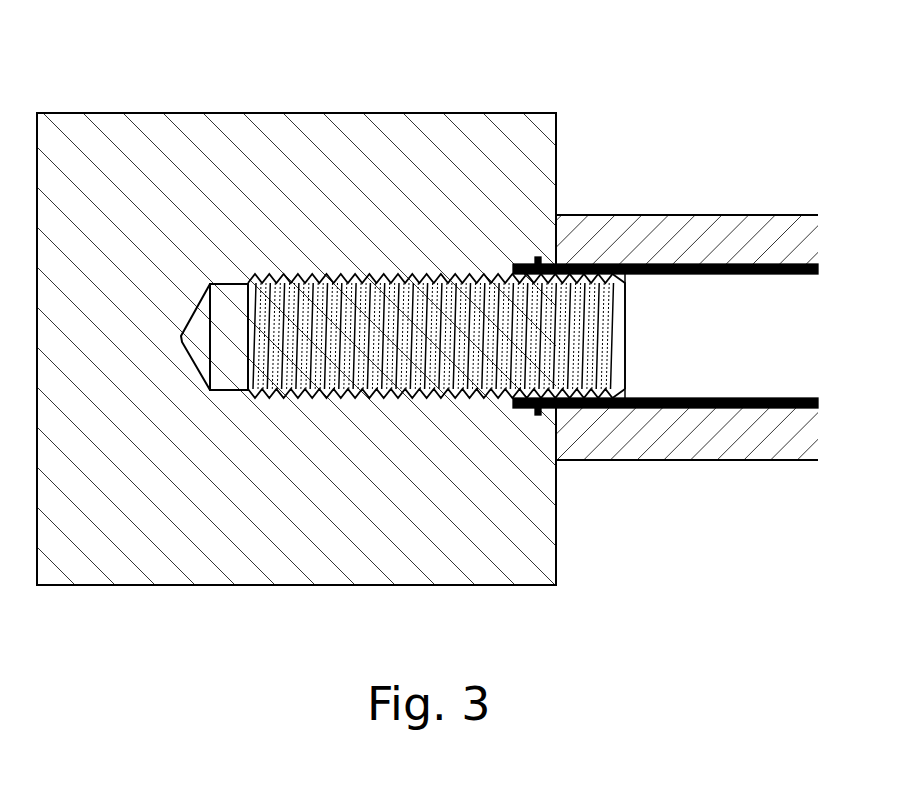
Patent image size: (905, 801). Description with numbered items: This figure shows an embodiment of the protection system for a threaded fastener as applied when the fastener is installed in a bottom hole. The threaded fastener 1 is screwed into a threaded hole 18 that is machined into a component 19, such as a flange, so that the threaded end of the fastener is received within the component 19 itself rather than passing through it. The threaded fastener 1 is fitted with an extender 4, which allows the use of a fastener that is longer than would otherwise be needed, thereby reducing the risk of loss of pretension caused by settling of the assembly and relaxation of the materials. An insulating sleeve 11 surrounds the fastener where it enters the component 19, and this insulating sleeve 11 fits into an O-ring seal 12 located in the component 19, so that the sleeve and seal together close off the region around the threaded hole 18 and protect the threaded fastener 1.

The threaded fastener 1 is at (663, 322).
The extender 4 is at (748, 238).
The insulating sleeve 11 is at (638, 265).
The O-ring seal 12 is at (540, 258).
The threaded hole 18 is at (235, 300).
The component 19 is at (284, 157).